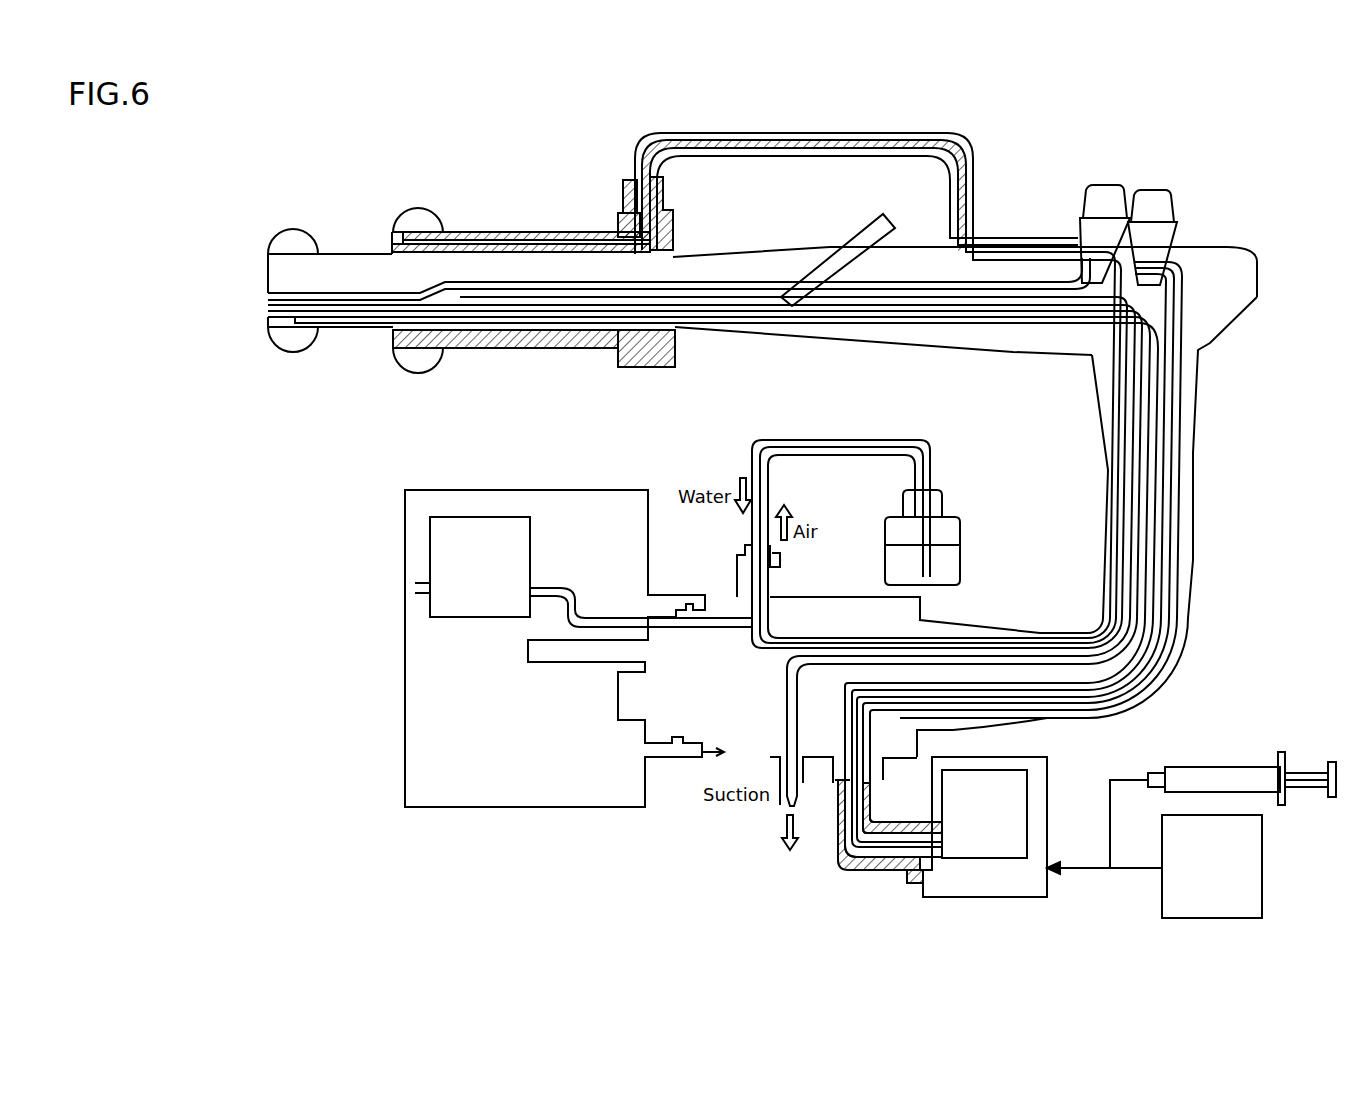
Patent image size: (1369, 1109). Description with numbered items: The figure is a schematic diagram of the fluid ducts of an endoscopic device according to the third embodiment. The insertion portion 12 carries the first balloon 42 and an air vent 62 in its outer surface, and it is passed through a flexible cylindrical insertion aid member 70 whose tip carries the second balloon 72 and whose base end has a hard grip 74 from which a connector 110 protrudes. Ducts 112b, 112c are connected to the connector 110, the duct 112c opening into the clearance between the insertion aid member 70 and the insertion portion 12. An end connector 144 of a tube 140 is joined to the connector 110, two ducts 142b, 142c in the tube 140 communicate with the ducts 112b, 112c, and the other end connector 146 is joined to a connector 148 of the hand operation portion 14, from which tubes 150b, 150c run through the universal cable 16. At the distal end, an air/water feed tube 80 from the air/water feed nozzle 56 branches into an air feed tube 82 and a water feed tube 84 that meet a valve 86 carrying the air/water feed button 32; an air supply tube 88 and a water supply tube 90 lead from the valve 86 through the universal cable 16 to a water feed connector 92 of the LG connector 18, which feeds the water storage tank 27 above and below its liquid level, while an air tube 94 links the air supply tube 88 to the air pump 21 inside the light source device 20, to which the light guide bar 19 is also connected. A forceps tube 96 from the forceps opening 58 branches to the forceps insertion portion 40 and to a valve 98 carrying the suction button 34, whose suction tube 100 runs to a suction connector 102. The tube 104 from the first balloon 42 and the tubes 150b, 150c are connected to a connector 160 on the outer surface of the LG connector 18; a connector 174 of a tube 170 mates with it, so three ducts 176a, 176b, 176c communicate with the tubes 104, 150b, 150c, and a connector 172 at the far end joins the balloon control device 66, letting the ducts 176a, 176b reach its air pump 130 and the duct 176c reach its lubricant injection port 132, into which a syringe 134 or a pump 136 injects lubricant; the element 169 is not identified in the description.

The insertion portion 12 is at (340, 254).
The hand operation portion 14 is at (1017, 353).
The universal cable 16 is at (1190, 612).
The LG connector 18 is at (725, 753).
The light guide bar 19 is at (612, 640).
The light source device 20 is at (405, 770).
The air pump 21 is at (430, 548).
The water storage tank 27 is at (960, 553).
The air/water feed button 32 is at (1104, 184).
The suction button 34 is at (1152, 190).
The forceps insertion portion 40 is at (888, 216).
The first balloon 42 is at (292, 230).
The air/water feed nozzle 56 is at (267, 295).
The forceps opening 58 is at (267, 308).
The air vent 62 is at (297, 333).
The balloon control device 66 is at (1008, 897).
The insertion aid member 70 is at (490, 232).
The second balloon 72 is at (418, 210).
The grip 74 is at (617, 353).
The air/water feed tube 80 is at (352, 300).
The air feed tube 82 is at (827, 303).
The water feed tube 84 is at (868, 290).
The valve 86 is at (1093, 237).
The air supply tube 88 is at (1113, 377).
The water supply tube 90 is at (1123, 429).
The water feed connector 92 is at (777, 557).
The air tube 94 is at (713, 617).
The forceps tube 96 is at (763, 307).
The valve 98 is at (1160, 245).
The suction tube 100 is at (1137, 367).
The suction connector 102 is at (783, 813).
The tube 104 is at (377, 318).
The connector 110 is at (625, 190).
The duct 112b is at (622, 226).
The duct 112c is at (668, 228).
The air pump 130 is at (1047, 775).
The lubricant injection port 132 is at (1050, 870).
The syringe 134 is at (1227, 770).
The pump 136 is at (1262, 857).
The tube 140 is at (793, 163).
The duct 142b is at (953, 135).
The duct 142c is at (893, 156).
The end connector 144 is at (635, 150).
The end connector 146 is at (983, 225).
The connector 148 is at (988, 237).
The tube 150b is at (997, 267).
The tube 150c is at (960, 300).
The connector 160 is at (885, 767).
The connector part 169 is at (933, 877).
The tube 170 is at (840, 877).
The connector 172 is at (918, 883).
The connector 174 is at (883, 780).
The duct 176a is at (880, 803).
The duct 176b is at (848, 830).
The duct 176c is at (878, 870).